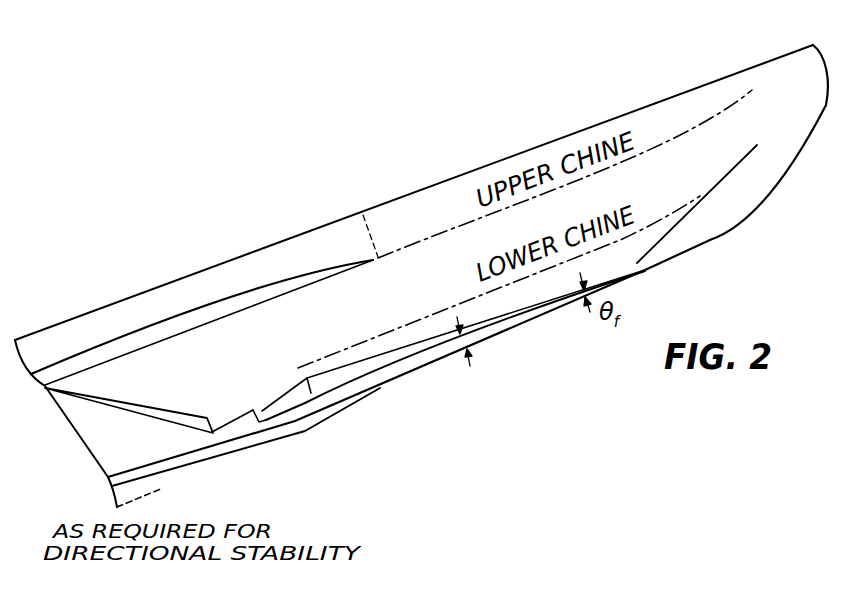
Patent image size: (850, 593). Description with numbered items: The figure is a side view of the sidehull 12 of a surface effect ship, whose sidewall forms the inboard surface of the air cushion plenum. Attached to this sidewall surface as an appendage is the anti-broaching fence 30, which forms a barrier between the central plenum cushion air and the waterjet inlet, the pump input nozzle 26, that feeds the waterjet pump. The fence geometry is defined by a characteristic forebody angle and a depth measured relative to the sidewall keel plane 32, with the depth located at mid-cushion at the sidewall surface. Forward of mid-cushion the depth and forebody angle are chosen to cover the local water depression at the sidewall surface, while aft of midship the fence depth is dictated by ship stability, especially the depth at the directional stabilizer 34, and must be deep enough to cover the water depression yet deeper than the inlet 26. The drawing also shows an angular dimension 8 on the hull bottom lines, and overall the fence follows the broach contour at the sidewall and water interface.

The angle between forebody and afterbody bottom lines 8 is at (475, 346).
The sidehull 12 is at (382, 285).
The pump input nozzle 26 is at (277, 403).
The anti-broaching fence 30 is at (390, 371).
The sidewall keel plane 32 is at (327, 372).
The directional stabilizer 34 is at (166, 487).